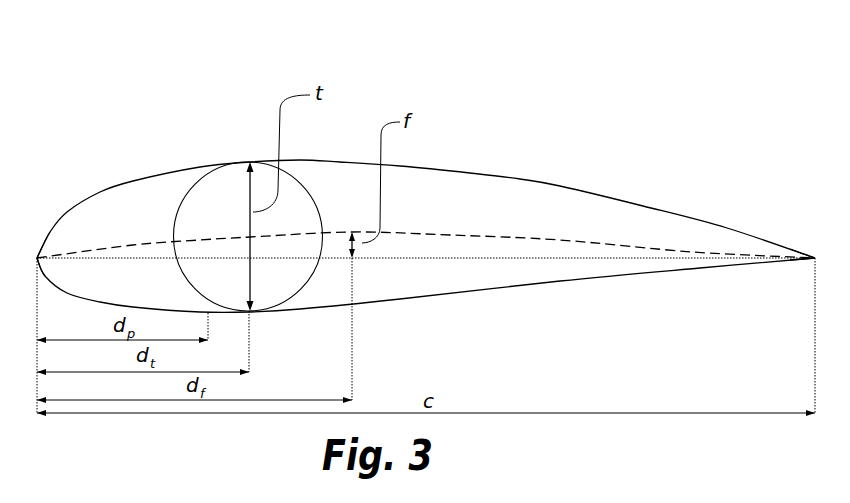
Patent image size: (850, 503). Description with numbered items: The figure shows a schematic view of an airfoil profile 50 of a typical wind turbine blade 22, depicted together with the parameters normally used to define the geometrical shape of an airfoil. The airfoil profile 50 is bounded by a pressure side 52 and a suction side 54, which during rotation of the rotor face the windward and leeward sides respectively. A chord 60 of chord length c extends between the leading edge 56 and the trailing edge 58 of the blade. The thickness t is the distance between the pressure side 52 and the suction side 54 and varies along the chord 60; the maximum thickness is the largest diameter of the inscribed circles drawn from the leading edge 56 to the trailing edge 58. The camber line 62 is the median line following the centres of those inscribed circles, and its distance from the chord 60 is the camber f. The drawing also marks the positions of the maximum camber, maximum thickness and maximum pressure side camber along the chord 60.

The airfoil profile 50 is at (397, 88).
The pressure side 52 is at (578, 283).
The suction side 54 is at (520, 177).
The leading edge 56 is at (37, 258).
The trailing edge 58 is at (815, 257).
The chord 60 is at (615, 257).
The camber line 62 is at (413, 233).
The blade 22 is at (118, 501).